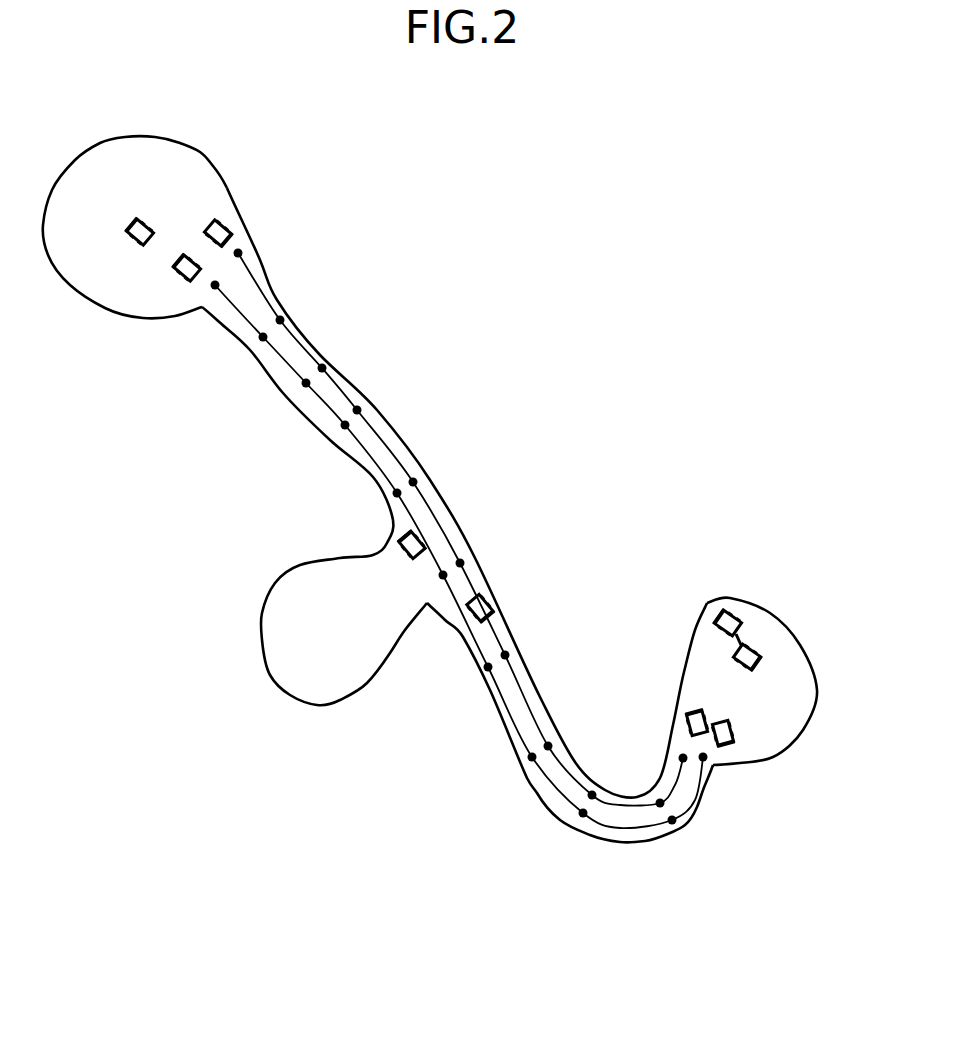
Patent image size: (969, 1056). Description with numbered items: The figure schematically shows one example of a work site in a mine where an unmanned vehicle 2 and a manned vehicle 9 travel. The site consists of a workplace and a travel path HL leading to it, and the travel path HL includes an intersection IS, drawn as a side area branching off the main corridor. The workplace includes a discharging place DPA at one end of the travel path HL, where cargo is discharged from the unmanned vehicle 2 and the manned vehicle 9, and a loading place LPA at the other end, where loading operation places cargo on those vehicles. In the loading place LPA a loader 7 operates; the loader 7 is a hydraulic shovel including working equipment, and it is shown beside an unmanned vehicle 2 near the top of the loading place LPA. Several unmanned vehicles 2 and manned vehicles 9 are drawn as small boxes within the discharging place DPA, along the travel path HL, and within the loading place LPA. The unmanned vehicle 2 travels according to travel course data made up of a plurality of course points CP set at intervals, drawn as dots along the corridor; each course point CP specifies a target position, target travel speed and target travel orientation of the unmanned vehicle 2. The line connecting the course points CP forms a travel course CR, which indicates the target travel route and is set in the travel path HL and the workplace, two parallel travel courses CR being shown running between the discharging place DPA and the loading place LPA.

The unmanned vehicle 2 is at (182, 278).
The loader 7 is at (721, 604).
The manned vehicle 9 is at (132, 241).
The course points CP is at (358, 409).
The travel course CR is at (527, 702).
The intersection IS is at (430, 612).
The travel path HL is at (541, 803).
The discharging place DPA is at (173, 201).
The loading place LPA is at (797, 714).